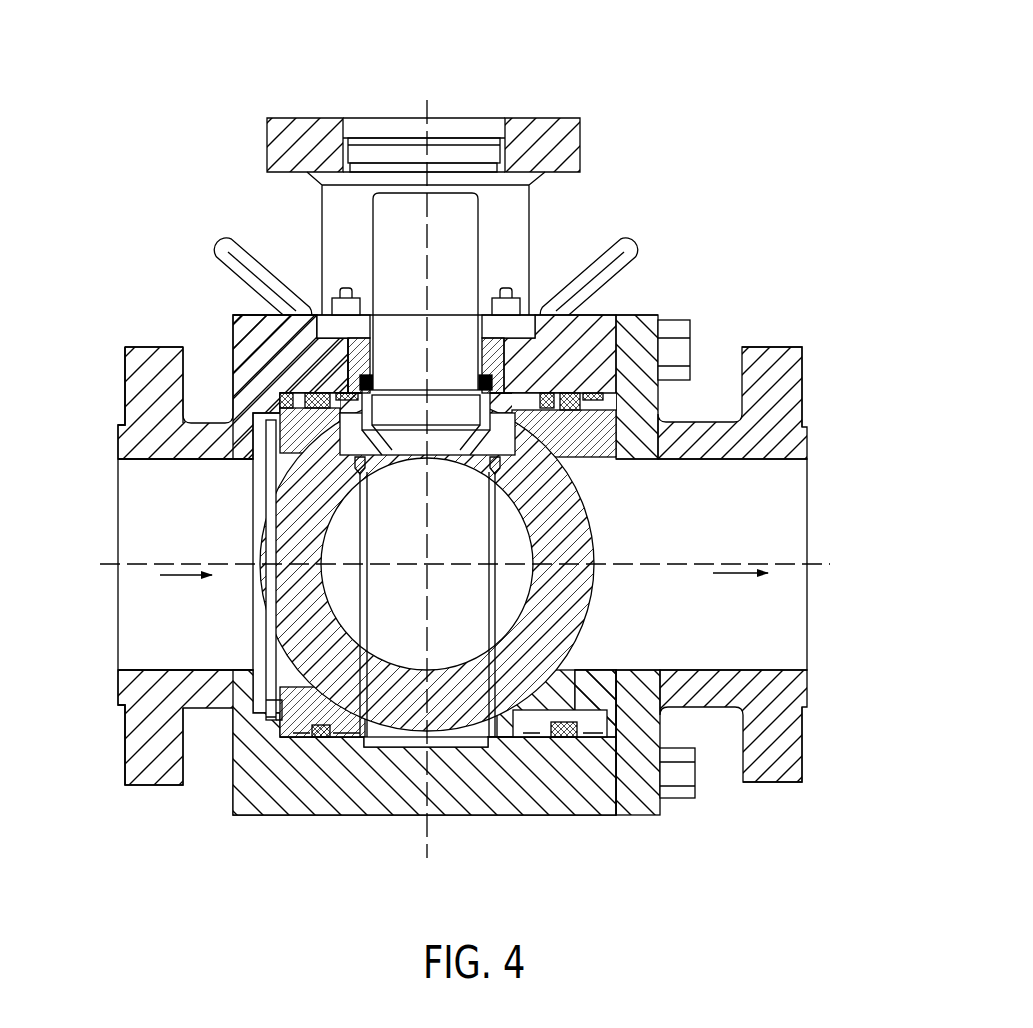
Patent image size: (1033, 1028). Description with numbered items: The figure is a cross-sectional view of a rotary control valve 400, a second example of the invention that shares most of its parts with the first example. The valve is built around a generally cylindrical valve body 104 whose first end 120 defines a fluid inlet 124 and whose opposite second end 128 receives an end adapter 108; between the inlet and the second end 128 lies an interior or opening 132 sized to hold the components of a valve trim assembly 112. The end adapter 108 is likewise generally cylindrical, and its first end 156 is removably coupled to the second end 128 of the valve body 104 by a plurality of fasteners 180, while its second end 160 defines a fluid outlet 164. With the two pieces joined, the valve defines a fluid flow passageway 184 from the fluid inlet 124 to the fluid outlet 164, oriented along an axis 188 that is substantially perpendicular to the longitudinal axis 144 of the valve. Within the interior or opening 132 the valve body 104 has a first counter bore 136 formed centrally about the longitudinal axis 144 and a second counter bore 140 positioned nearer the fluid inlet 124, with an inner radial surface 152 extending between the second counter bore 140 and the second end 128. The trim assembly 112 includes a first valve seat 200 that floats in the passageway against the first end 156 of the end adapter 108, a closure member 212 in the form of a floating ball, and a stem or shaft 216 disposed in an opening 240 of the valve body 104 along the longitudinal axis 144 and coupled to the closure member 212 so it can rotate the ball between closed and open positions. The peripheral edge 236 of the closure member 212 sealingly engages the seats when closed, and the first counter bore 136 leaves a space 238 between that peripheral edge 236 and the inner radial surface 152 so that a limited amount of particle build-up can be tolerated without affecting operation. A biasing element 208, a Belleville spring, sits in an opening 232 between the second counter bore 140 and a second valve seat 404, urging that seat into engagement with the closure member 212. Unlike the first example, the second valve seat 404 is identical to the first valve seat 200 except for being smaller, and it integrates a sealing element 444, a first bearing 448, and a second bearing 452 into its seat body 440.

The rotary control valve 400 is at (645, 98).
The valve body 104 is at (227, 781).
The end adapter 108 is at (720, 718).
The valve trim assembly 112 is at (590, 512).
The first end 120 is at (122, 450).
The fluid inlet 124 is at (143, 612).
The second end 128 is at (617, 786).
The interior or opening 132 is at (330, 748).
The first counter bore 136 is at (447, 751).
The second counter bore 140 is at (267, 722).
The longitudinal axis 144 is at (427, 832).
The inner radial surface 152 is at (498, 384).
The first end 156 is at (617, 806).
The second end 160 is at (802, 757).
The fluid outlet 164 is at (775, 630).
The fasteners 180 is at (693, 352).
The fluid flow passageway 184 is at (464, 596).
The axis 188 is at (826, 558).
The first valve seat 200 is at (560, 748).
The biasing element 208 is at (267, 692).
The closure member 212 is at (596, 550).
The stem or shaft 216 is at (503, 210).
The opening 232 is at (287, 721).
The peripheral edge 236 is at (594, 594).
The space 238 is at (383, 741).
The opening 240 is at (345, 298).
The second valve seat 404 is at (292, 458).
The seat body 440 is at (280, 400).
The sealing element 444 is at (290, 290).
The first bearing 448 is at (280, 395).
The second bearing 452 is at (343, 405).